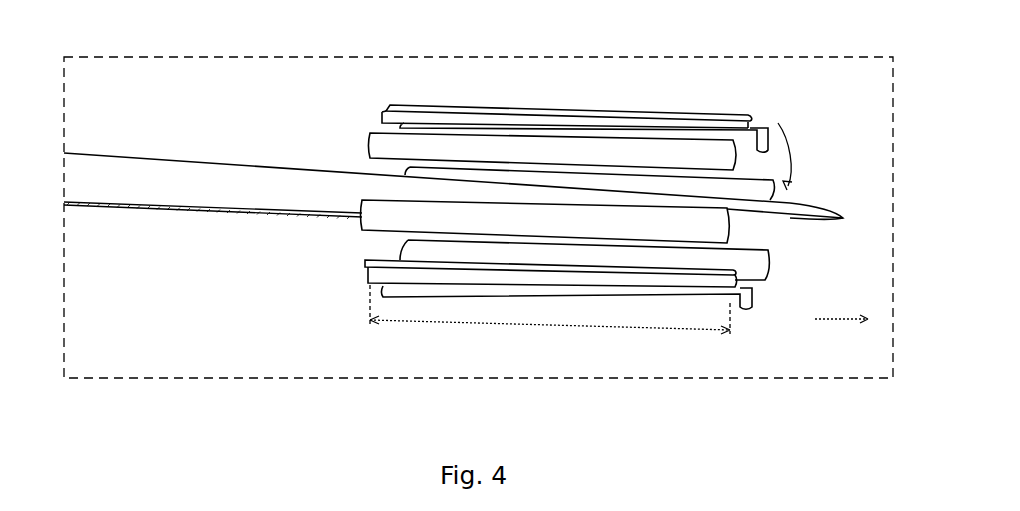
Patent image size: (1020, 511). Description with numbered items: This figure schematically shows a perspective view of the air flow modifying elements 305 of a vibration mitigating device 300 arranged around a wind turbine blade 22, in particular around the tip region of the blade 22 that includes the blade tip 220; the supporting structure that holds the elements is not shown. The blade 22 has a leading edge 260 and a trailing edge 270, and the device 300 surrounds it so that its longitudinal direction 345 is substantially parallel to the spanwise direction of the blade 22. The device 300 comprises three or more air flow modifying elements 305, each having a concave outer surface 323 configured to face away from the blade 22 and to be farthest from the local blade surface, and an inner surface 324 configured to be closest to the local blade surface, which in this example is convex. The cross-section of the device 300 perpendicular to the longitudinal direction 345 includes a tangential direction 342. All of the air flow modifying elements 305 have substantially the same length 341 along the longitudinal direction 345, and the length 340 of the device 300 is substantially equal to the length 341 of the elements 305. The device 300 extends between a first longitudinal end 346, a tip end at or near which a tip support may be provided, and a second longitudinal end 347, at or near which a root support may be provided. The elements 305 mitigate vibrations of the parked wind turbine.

The wind turbine blade 22 is at (203, 165).
The trailing edge 270 is at (175, 212).
The leading edge 260 is at (265, 217).
The blade tip 220 is at (847, 217).
The air flow modifying elements 305 is at (433, 103).
The second longitudinal end 347 is at (373, 188).
The concave outer surface 323 is at (723, 237).
The inner surface 324 is at (757, 279).
The vibration mitigating device 300 is at (738, 104).
The tangential direction 342 is at (793, 160).
The first longitudinal end 346 is at (788, 214).
The longitudinal direction 345 is at (840, 318).
The length of the device 340 is at (500, 325).
The length of the air flow modifying elements 341 is at (693, 332).